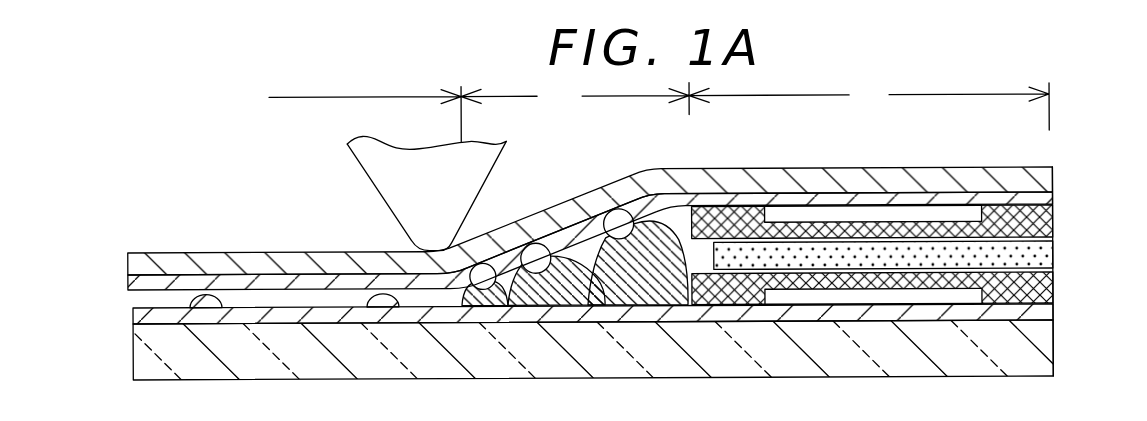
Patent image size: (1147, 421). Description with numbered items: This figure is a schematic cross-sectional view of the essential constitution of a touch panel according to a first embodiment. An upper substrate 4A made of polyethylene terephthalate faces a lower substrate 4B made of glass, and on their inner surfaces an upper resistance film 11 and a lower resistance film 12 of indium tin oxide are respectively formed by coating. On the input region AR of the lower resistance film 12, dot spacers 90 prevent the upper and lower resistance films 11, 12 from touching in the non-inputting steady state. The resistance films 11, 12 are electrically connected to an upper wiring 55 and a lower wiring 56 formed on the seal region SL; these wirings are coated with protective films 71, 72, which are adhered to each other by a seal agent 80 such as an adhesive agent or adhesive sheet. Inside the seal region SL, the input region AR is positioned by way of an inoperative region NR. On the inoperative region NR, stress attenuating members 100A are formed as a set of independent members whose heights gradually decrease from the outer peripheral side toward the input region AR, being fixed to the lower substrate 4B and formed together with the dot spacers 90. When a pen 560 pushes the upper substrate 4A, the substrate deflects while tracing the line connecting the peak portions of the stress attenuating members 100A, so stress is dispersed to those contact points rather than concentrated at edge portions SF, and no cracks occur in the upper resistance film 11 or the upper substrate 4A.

The upper substrate 4A is at (283, 253).
The lower substrate 4B is at (1042, 340).
The upper resistance film 11 is at (130, 283).
The lower resistance film 12 is at (133, 313).
The dot spacers 90 is at (206, 295).
The stress attenuating members 100A is at (467, 240).
The edge portions SF is at (466, 253).
The pen 560 is at (358, 164).
The upper wiring 55 is at (879, 221).
The lower wiring 56 is at (881, 300).
The upper protective film 71 is at (1053, 218).
The lower protective film 72 is at (1052, 290).
The seal agent 80 is at (1045, 255).
The input region AR is at (341, 114).
The inoperative region NR is at (575, 99).
The seal region SL is at (869, 107).